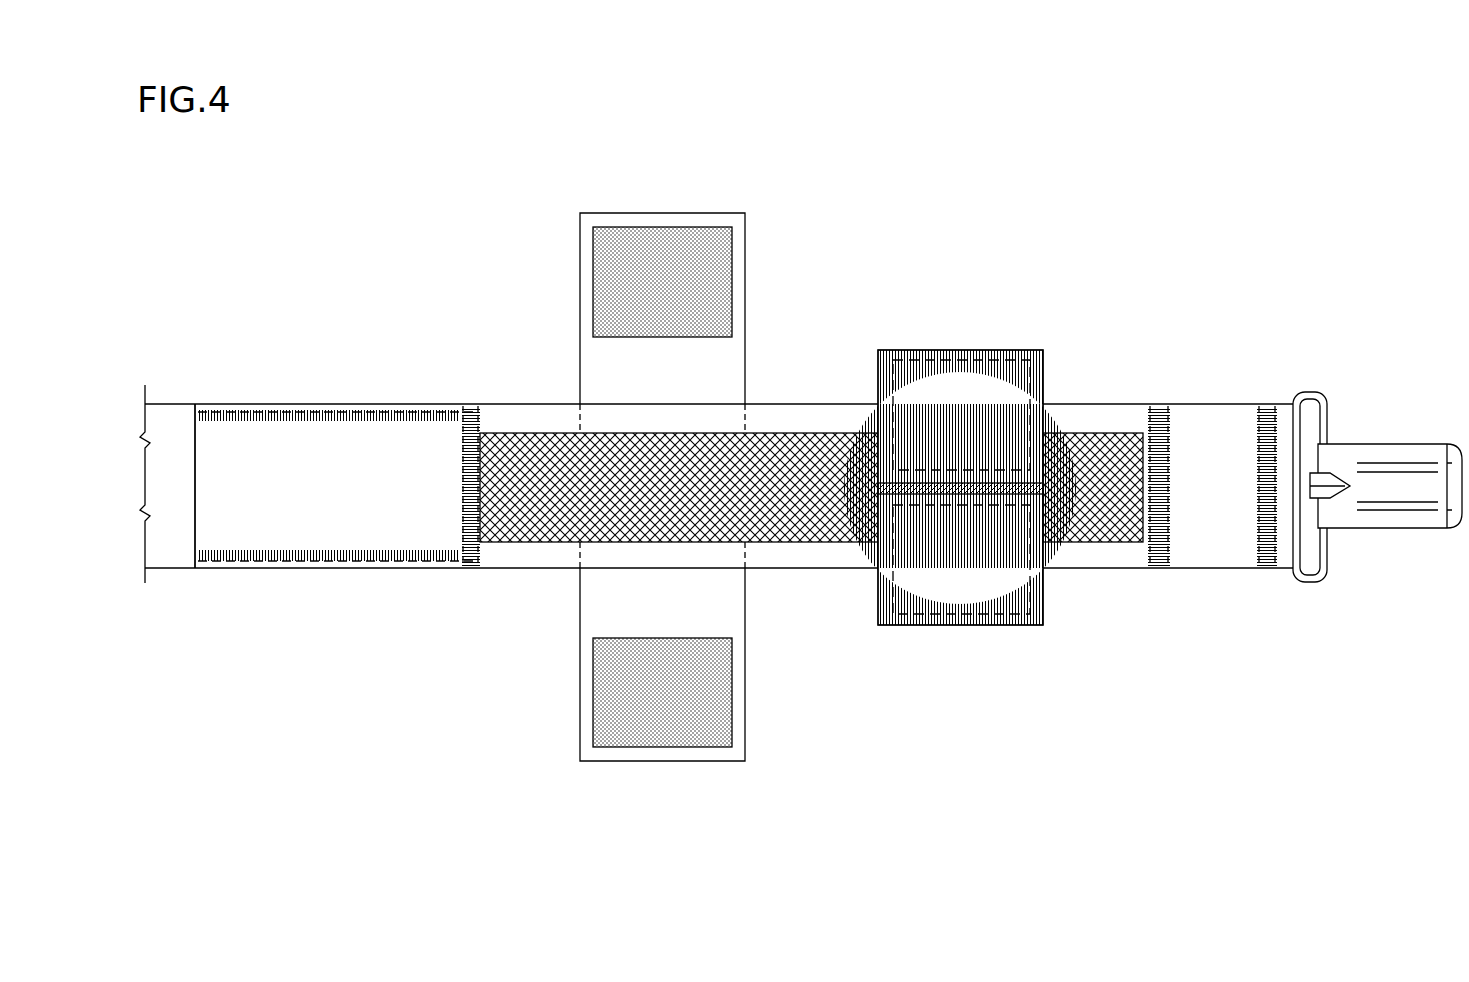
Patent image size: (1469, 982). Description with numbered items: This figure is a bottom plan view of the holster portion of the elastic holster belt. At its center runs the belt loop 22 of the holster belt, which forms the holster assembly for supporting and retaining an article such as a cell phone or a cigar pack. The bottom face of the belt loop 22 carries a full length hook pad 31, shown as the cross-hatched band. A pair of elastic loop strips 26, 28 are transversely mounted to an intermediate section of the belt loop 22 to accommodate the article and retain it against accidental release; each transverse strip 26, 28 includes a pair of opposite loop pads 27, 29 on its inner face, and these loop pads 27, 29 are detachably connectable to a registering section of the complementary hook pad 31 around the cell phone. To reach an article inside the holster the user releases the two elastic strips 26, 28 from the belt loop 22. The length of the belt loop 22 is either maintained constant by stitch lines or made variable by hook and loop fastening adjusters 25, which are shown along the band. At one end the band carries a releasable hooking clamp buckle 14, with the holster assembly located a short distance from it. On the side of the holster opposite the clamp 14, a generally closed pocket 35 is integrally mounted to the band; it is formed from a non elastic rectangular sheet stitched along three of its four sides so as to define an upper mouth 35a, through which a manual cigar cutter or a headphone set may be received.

The releasable hooking clamp buckle 14 is at (1368, 460).
The belt loop 22 is at (808, 558).
The hook and loop fastening adjusters 25 is at (472, 518).
The elastic loop strip 26 is at (737, 367).
The loop pad 27 is at (622, 274).
The elastic loop strip 28 is at (952, 388).
The loop pad 29 is at (650, 714).
The hook pad 31 is at (765, 460).
The pocket 35 is at (327, 495).
The upper mouth 35a is at (195, 487).